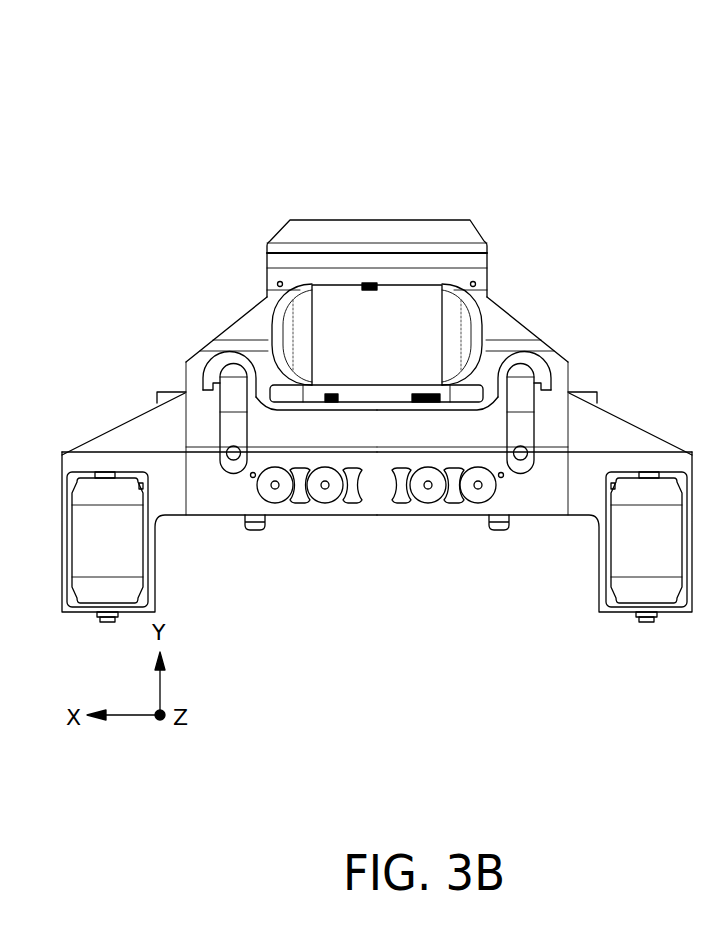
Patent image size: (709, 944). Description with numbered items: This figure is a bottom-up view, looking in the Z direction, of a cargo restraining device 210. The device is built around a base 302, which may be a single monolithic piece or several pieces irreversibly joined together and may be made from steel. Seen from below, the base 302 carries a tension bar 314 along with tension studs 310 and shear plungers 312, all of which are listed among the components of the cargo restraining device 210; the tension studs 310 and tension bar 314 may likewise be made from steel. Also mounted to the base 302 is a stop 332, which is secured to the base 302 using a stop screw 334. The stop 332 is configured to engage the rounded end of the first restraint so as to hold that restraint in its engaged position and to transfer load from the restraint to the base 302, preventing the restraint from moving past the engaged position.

The cargo restraining device 210 is at (254, 118).
The base 302 is at (124, 343).
The tension bar 314 is at (451, 236).
The stop 332 is at (523, 422).
The stop screw 334 is at (520, 450).
The shear plungers 312 is at (352, 478).
The tension studs 310 is at (326, 504).